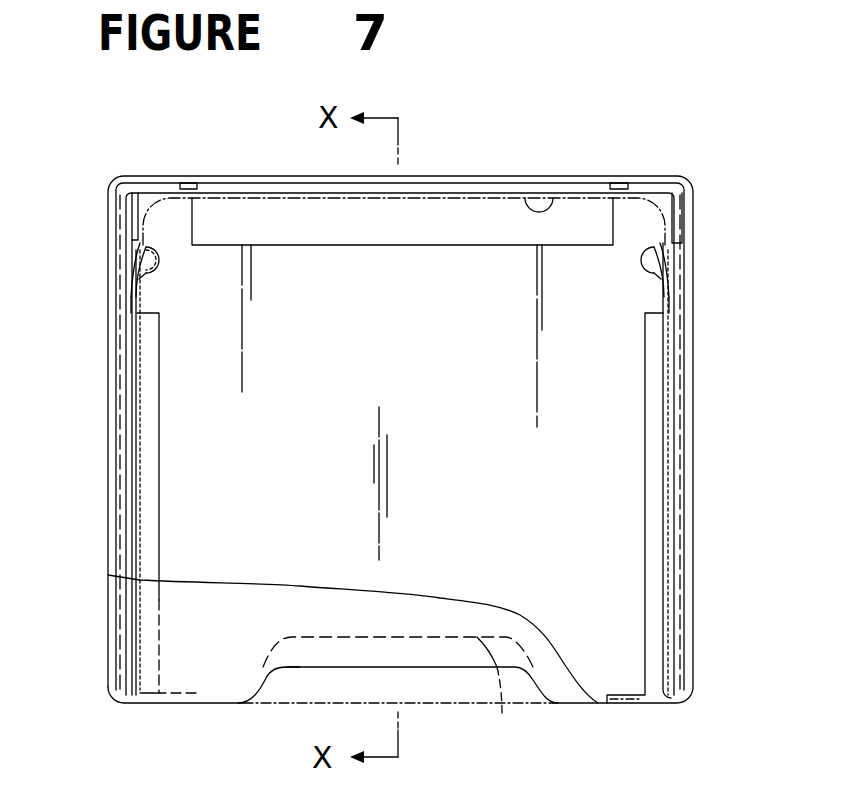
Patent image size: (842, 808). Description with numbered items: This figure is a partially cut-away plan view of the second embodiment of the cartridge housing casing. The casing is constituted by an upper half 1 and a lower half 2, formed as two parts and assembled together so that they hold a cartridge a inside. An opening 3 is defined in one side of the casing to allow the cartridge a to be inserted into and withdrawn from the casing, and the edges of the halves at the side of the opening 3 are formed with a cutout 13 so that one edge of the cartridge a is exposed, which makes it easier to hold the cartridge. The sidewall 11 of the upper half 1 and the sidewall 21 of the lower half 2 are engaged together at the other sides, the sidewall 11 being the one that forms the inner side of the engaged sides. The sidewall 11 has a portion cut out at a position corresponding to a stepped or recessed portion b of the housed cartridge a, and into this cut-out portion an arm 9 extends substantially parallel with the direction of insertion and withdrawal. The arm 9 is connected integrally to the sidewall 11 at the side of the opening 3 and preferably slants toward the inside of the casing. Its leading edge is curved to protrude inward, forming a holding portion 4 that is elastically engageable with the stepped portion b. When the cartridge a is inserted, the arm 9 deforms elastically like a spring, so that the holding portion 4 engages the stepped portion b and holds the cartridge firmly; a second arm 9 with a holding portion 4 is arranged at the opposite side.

The upper half 1 is at (195, 663).
The lower half 2 is at (170, 423).
The opening 3 is at (538, 707).
The holding portion 4 is at (132, 259).
The arm 9 is at (144, 283).
The sidewall of the upper half 11 is at (107, 610).
The cutout 13 is at (297, 667).
The sidewall of the lower half 21 is at (110, 322).
The cartridge a is at (157, 200).
The stepped or recessed portion b is at (159, 262).